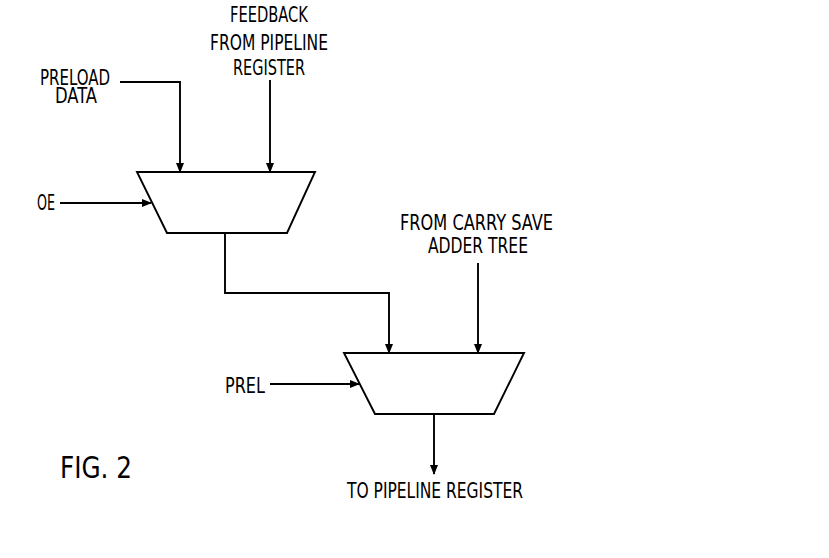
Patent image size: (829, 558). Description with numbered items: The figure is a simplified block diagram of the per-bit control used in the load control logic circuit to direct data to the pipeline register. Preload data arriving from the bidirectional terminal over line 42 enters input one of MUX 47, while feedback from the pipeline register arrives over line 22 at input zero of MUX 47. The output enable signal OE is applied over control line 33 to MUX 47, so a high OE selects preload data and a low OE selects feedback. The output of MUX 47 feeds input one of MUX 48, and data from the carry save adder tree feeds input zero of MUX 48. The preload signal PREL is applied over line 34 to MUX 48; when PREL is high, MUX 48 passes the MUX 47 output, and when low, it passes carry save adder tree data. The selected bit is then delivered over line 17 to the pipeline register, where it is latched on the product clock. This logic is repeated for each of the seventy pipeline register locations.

The line 42 is at (179, 138).
The line 22 is at (271, 138).
The control line 33 is at (117, 205).
The MUX 47 is at (195, 235).
The line 34 is at (330, 388).
The MUX 48 is at (409, 417).
The line 17 is at (436, 432).